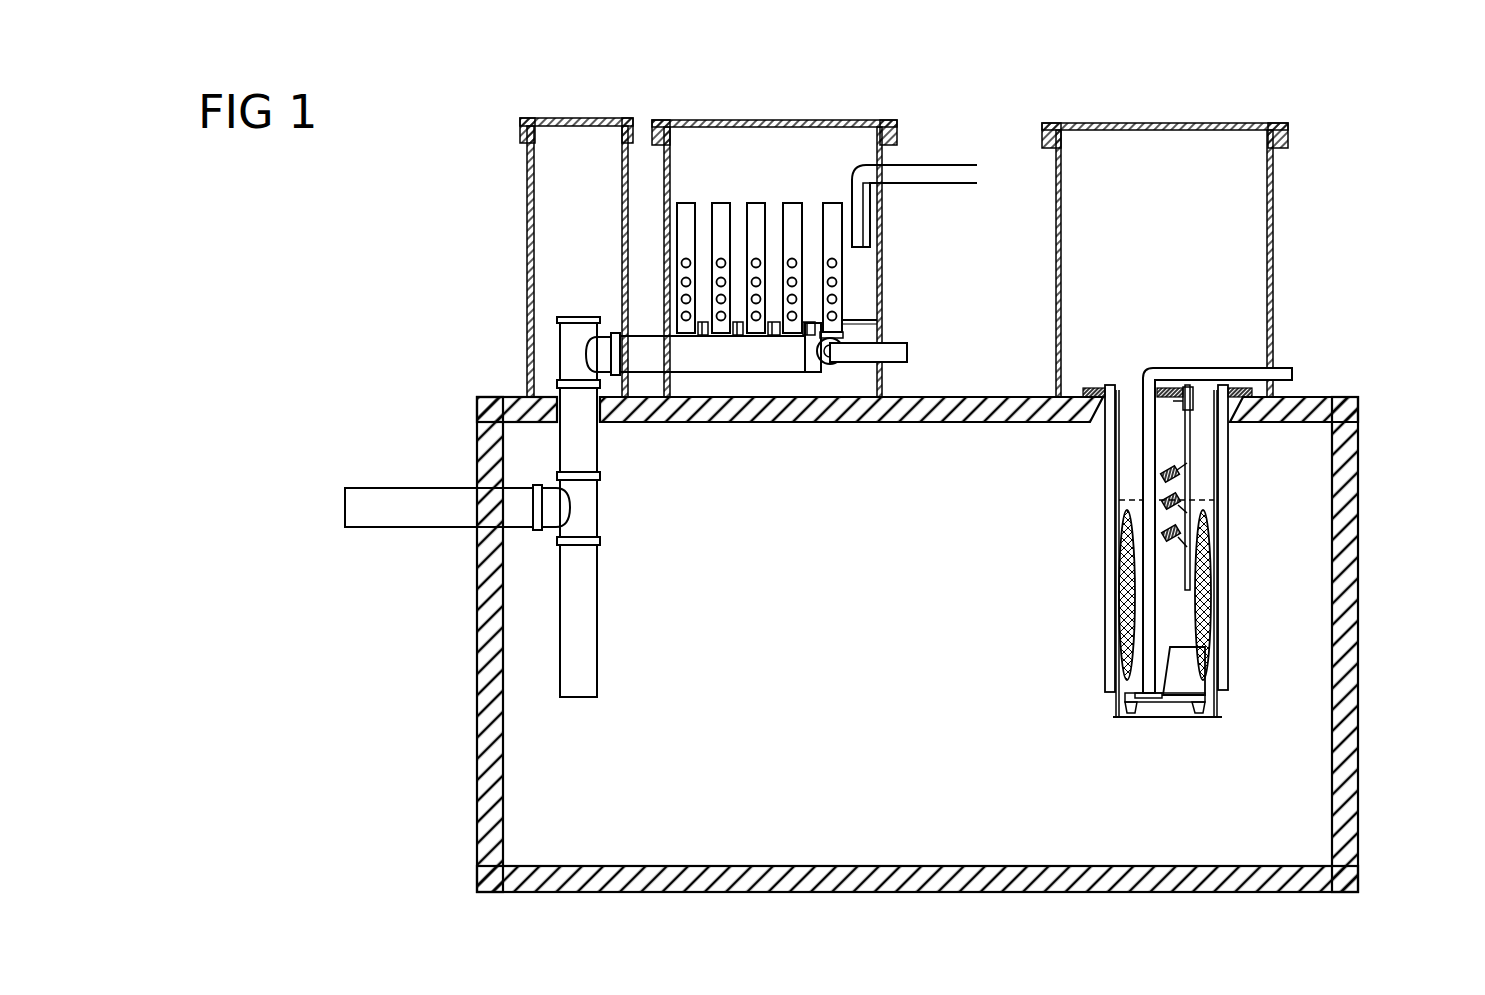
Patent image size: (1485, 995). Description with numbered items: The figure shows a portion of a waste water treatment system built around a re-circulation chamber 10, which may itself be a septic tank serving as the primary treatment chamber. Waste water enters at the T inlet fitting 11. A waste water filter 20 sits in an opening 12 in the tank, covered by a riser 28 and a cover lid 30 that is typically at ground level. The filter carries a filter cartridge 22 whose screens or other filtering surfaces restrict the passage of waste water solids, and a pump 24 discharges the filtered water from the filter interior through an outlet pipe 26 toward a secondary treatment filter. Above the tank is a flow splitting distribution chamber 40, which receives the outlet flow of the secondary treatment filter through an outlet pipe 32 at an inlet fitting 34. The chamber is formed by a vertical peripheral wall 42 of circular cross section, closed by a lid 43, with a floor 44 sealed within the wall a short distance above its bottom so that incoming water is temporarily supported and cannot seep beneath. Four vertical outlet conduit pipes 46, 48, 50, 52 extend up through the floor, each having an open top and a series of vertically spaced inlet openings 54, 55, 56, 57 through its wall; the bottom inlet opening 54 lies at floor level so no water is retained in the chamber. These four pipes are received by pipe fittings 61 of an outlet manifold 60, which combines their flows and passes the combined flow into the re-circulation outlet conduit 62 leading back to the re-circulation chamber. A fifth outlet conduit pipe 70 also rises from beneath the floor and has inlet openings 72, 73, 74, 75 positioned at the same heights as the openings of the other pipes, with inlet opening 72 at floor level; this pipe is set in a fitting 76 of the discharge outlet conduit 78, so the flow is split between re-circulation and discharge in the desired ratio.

The re-circulation chamber 10 is at (1343, 597).
The T inlet fitting 11 is at (585, 592).
The opening 12 is at (1232, 417).
The waste water filter 20 is at (1103, 507).
The filter cartridge 22 is at (1125, 673).
The pump 24 is at (1185, 668).
The outlet pipe 26 is at (1147, 487).
The riser 28 is at (1274, 250).
The cover lid 30 is at (1220, 123).
The outlet pipe 32 is at (917, 177).
The inlet fitting 34 is at (866, 195).
The flow splitting distribution chamber 40 is at (662, 68).
The vertical peripheral wall 42 is at (883, 223).
The lid 43 is at (850, 122).
The floor 44 is at (867, 324).
The vertical outlet conduit pipe 46 is at (687, 208).
The vertical outlet conduit pipe 48 is at (722, 212).
The vertical outlet conduit pipe 50 is at (755, 208).
The vertical outlet conduit pipe 52 is at (792, 212).
The inlet opening 54 is at (682, 313).
The inlet opening 55 is at (682, 296).
The inlet opening 56 is at (682, 279).
The inlet opening 57 is at (682, 259).
The outlet manifold 60 is at (712, 354).
The pipe fittings 61 is at (747, 330).
The re-circulation outlet conduit 62 is at (572, 327).
The fifth outlet conduit pipe 70 is at (832, 208).
The inlet opening 72 is at (837, 316).
The inlet opening 73 is at (838, 299).
The inlet opening 74 is at (838, 282).
The inlet opening 75 is at (838, 263).
The fitting 76 is at (817, 347).
The discharge outlet conduit 78 is at (898, 357).